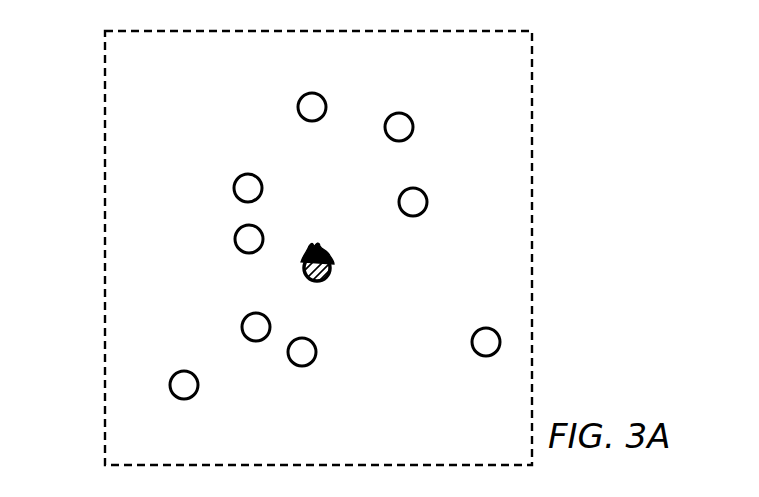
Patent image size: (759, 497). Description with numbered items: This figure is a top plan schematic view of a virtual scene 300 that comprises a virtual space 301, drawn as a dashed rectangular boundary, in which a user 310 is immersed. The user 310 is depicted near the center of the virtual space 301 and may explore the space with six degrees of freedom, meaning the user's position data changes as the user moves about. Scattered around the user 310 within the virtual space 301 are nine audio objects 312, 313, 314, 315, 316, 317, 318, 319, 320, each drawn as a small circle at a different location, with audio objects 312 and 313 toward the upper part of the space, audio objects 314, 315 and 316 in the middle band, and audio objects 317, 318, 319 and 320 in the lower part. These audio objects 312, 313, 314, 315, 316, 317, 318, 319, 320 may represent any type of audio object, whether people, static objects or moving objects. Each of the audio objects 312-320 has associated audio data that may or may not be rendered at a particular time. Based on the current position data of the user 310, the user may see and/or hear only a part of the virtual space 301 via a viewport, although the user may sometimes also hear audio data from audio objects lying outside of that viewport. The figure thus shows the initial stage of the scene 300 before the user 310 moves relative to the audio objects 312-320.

The virtual scene 300 is at (104, 138).
The virtual space 301 is at (148, 71).
The user 310 is at (333, 272).
The audio object 312 is at (299, 103).
The audio object 313 is at (396, 113).
The audio object 314 is at (234, 185).
The audio object 315 is at (399, 199).
The audio object 316 is at (236, 235).
The audio object 317 is at (242, 323).
The audio object 318 is at (473, 336).
The audio object 319 is at (315, 357).
The audio object 320 is at (173, 374).